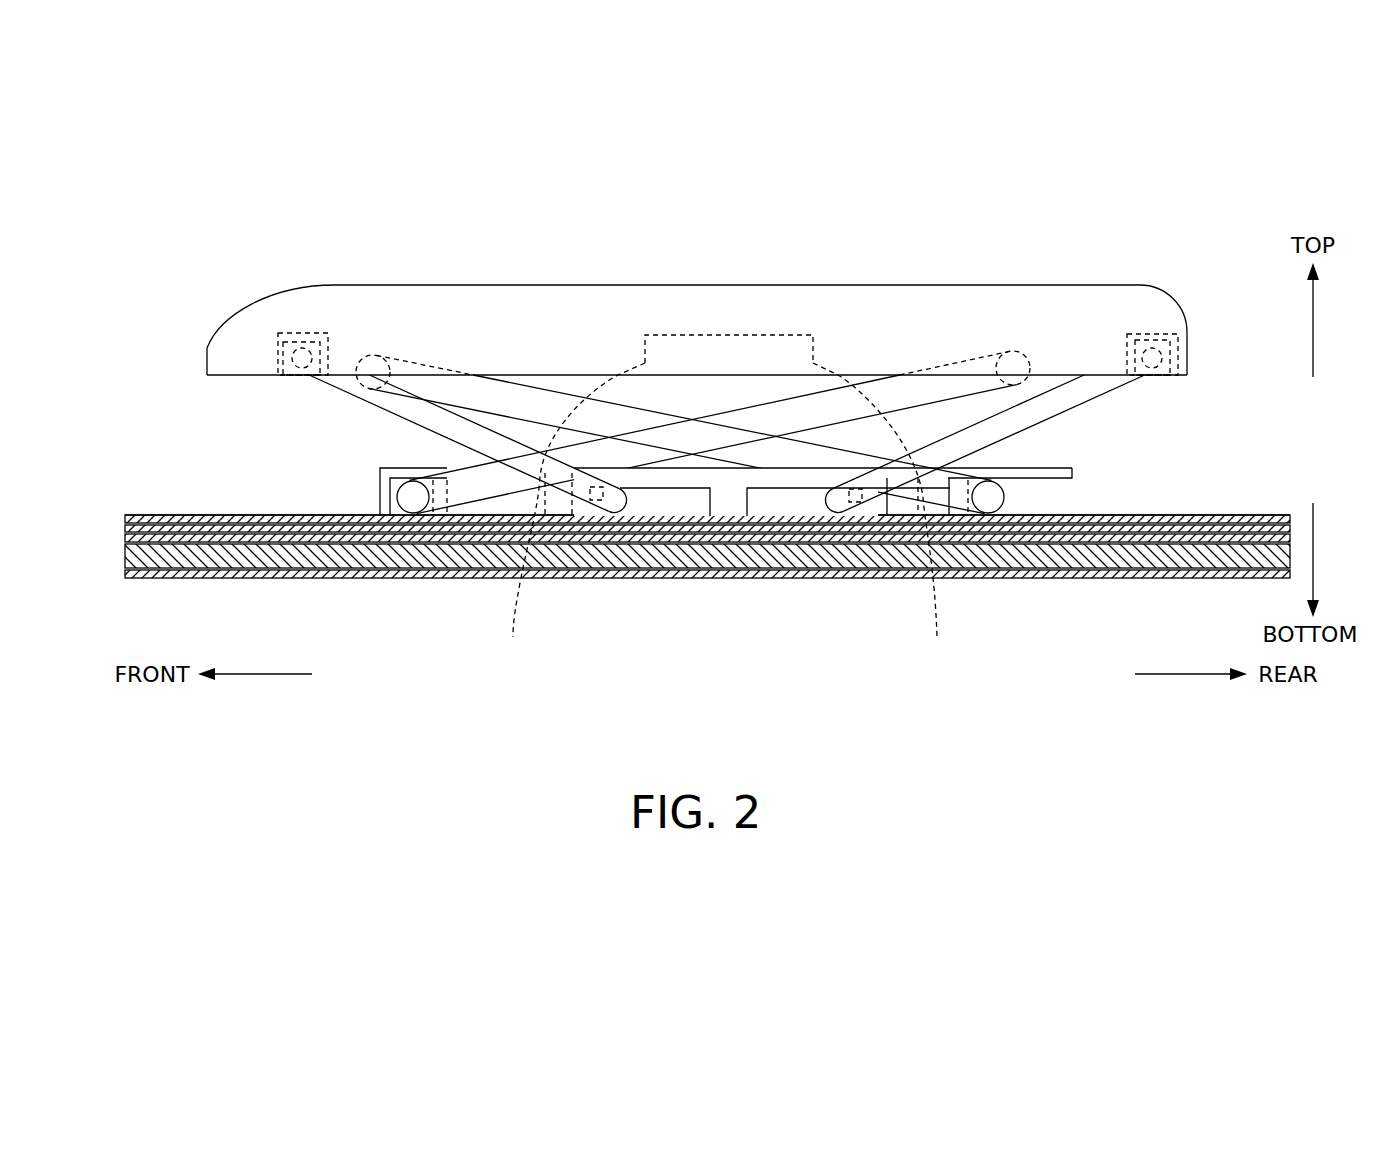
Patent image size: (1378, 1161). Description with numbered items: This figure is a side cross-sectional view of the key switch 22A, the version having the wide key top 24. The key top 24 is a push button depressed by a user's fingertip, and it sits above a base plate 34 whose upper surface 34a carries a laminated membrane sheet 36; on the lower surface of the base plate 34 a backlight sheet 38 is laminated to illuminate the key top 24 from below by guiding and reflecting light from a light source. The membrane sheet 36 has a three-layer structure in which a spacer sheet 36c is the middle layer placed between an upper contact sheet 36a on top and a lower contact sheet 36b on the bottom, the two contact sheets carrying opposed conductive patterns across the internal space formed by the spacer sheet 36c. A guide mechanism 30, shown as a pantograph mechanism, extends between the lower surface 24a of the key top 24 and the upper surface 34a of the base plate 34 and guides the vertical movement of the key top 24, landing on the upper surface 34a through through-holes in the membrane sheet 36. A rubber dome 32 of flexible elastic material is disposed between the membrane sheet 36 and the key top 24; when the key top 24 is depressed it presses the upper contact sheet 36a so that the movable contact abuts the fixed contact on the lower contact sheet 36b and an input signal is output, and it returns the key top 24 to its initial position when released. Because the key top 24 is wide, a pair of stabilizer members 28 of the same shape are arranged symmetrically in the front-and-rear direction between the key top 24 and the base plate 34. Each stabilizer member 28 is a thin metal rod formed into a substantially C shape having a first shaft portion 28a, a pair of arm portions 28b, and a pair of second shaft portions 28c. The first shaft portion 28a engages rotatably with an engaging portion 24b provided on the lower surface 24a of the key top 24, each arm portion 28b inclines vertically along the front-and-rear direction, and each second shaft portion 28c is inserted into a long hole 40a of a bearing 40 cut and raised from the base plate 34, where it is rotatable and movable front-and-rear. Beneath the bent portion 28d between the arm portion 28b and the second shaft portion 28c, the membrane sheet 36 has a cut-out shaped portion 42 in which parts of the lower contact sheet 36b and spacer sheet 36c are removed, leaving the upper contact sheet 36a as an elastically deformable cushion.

The key switch 22A is at (131, 221).
The key top 24 is at (490, 300).
The lower surface of the key top 24a is at (247, 377).
The engaging portion 24b is at (313, 333).
The stabilizer member 28 is at (362, 406).
The first shaft portion 28a is at (296, 346).
The arm portion 28b is at (412, 417).
The second shaft portion 28c is at (590, 500).
The bent portion 28d is at (617, 512).
The guide mechanism 30 is at (720, 428).
The rubber dome 32 is at (738, 325).
The base plate 34 is at (125, 555).
The upper surface of the base plate 34a is at (247, 516).
The membrane sheet 36 is at (650, 520).
The upper contact sheet 36a is at (125, 517).
The lower contact sheet 36b is at (672, 546).
The spacer sheet 36c is at (125, 528).
The backlight sheet 38 is at (125, 575).
The bearing 40 is at (795, 460).
The long hole 40a is at (683, 502).
The cut-out shaped portion 42 is at (728, 517).